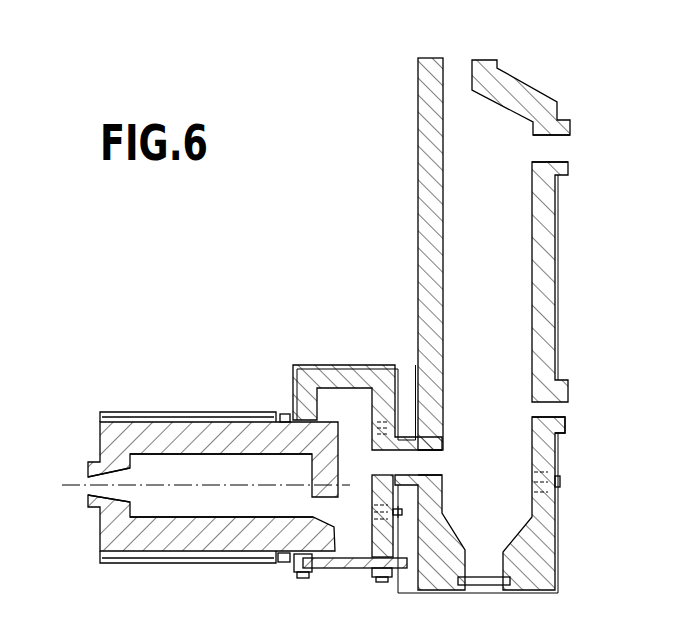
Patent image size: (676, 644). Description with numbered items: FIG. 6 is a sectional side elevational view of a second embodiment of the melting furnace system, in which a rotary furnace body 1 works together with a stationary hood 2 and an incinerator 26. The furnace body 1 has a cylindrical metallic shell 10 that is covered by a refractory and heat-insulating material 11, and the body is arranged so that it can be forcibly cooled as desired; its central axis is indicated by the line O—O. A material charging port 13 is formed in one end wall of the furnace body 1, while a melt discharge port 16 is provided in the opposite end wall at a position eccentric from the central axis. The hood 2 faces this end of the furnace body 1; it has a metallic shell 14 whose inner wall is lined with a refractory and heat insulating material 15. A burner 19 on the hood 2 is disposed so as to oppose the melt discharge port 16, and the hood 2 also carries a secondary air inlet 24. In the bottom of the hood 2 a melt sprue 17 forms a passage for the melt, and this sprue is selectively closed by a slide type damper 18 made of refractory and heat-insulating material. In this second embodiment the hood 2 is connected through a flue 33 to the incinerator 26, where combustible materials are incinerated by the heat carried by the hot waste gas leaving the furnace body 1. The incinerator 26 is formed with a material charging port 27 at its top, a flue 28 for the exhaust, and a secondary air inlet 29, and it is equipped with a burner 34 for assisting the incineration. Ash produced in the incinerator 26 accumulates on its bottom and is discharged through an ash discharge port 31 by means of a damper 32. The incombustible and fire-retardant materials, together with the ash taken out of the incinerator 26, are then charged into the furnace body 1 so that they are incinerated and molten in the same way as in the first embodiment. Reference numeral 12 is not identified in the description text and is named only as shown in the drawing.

The furnace body 1 is at (88, 437).
The hood 2 is at (388, 254).
The cylindrical metallic shell 10 is at (282, 413).
The refractory and heat-insulating material 11 is at (213, 461).
The outer sleeve 12 is at (243, 411).
The material charging port 13 is at (88, 490).
The metallic shell 14 is at (400, 395).
The refractory and heat insulating material 15 is at (387, 421).
The melt discharge port 16 is at (321, 572).
The melt sprue 17 is at (365, 550).
The slide type damper 18 is at (348, 570).
The burner 19 is at (405, 516).
The secondary air inlet 24 is at (373, 433).
The incinerator 26 is at (548, 268).
The material charging port 27 is at (458, 67).
The flue 28 is at (565, 149).
The secondary air inlet 29 is at (566, 415).
The ash discharge port 31 is at (485, 560).
The damper 32 is at (487, 586).
The flue 33 is at (437, 460).
The burner 34 is at (560, 481).